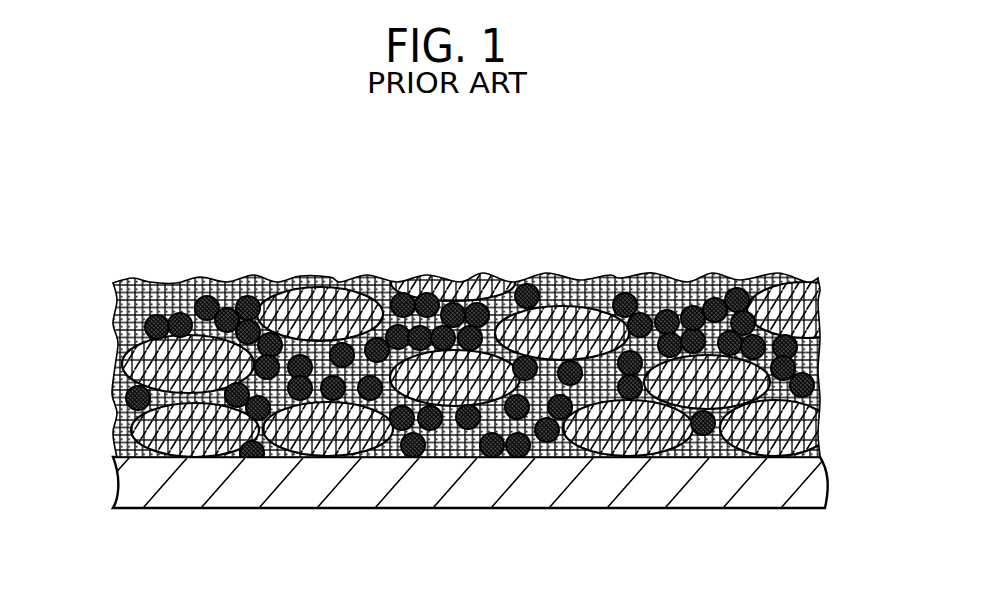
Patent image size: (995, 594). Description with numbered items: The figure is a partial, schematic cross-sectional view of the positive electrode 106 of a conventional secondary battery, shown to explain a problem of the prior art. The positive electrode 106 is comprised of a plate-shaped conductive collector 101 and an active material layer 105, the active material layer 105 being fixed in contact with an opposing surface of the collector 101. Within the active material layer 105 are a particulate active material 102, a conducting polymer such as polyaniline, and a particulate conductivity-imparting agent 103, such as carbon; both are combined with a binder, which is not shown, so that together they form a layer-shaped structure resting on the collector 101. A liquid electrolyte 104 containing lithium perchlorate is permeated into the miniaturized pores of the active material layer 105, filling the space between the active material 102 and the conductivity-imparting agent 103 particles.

The plate-shaped conductive collector 101 is at (447, 500).
The particulate active material 102 is at (335, 302).
The particulate conductivity-imparting agent 103 is at (663, 307).
The liquid electrolyte 104 is at (176, 300).
The active material layer 105 is at (833, 275).
The positive electrode 106 is at (133, 226).